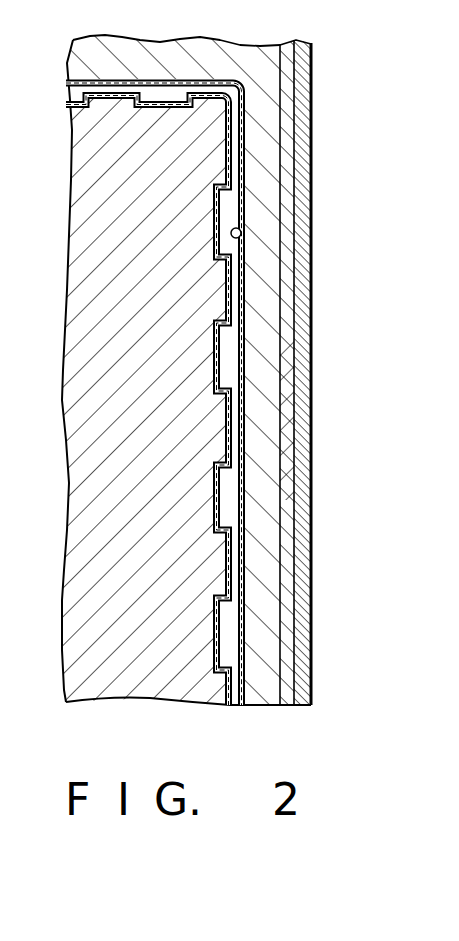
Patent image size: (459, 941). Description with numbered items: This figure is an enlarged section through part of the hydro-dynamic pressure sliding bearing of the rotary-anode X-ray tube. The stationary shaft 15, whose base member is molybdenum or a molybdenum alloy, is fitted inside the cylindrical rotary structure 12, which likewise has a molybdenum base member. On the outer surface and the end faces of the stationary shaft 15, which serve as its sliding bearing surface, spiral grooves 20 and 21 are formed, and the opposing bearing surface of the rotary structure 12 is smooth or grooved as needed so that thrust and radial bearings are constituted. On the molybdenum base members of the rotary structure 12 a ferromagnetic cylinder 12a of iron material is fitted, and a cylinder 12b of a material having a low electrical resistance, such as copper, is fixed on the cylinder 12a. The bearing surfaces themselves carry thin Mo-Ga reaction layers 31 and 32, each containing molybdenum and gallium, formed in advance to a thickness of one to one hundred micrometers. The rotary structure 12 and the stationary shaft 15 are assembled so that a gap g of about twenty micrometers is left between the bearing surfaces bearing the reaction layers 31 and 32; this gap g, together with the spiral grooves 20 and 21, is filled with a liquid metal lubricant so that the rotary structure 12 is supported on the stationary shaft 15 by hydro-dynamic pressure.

The cylindrical rotary structure 12 is at (226, 353).
The ferromagnetic cylinder 12a is at (287, 640).
The cylinder of low electrical resistance material 12b is at (300, 688).
The stationary shaft 15 is at (98, 237).
The spiral grooves 20 is at (229, 477).
The spiral grooves 21 is at (162, 96).
The Mo-Ga reaction layer 31 is at (227, 207).
The Mo-Ga reaction layer 32 is at (244, 243).
The gap g is at (240, 560).